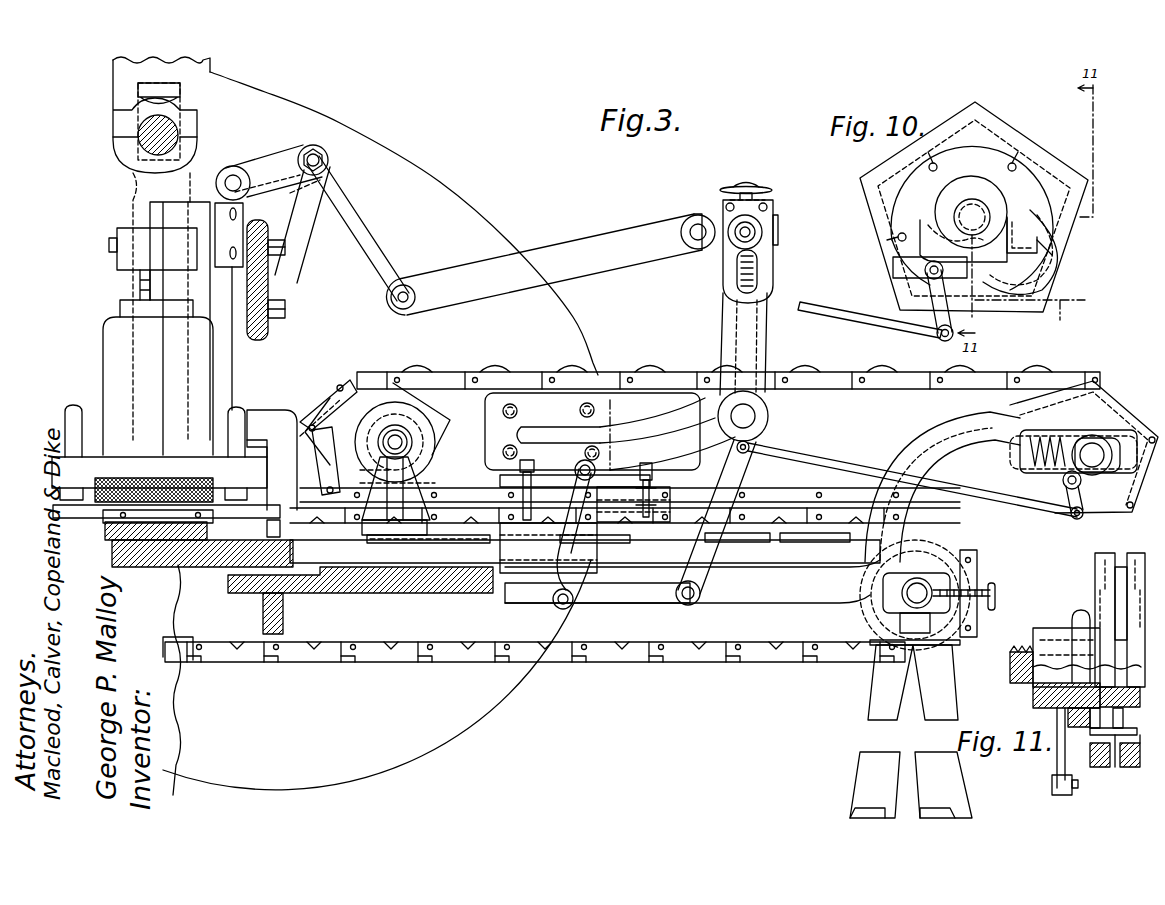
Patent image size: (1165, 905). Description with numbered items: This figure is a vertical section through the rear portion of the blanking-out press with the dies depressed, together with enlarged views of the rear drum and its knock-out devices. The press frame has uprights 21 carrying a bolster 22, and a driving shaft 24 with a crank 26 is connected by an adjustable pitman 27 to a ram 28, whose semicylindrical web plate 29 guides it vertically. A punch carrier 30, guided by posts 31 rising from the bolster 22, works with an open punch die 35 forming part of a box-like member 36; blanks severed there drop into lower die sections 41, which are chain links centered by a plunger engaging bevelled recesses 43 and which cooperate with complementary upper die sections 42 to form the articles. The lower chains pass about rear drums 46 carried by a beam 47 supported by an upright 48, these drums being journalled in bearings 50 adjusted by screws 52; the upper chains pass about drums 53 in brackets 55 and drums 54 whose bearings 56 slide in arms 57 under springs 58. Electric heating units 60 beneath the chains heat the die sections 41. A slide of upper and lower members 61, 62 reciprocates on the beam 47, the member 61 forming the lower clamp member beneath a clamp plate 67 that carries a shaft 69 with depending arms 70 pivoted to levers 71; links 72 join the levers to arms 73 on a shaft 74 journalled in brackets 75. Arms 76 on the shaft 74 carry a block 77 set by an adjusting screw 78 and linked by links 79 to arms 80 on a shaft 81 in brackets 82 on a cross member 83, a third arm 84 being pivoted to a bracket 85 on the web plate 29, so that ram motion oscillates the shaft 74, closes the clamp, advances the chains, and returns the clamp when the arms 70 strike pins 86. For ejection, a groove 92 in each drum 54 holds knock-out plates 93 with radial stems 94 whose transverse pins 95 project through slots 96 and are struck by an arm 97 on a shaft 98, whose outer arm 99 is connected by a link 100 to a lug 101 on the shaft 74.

In FIG. 3, the uprights 21 is at (440, 182).
In FIG. 3, the bolster 22 is at (160, 567).
In FIG. 3, the driving shaft 24 is at (175, 98).
In FIG. 3, the crank 26 is at (138, 147).
In FIG. 3, the pitman 27 is at (128, 210).
In FIG. 3, the ram 28 is at (110, 353).
In FIG. 3, the web plate 29 is at (228, 378).
In FIG. 3, the punch carrier 30 is at (52, 470).
In FIG. 3, the posts 31 is at (65, 417).
In FIG. 3, the punch die 35 is at (100, 503).
In FIG. 3, the box-like member 36 is at (112, 523).
In FIG. 3, the lower die sections 41 is at (398, 664).
In FIG. 3, the upper die sections 42 is at (822, 377).
In FIG. 3, the bevelled recesses 43 is at (308, 641).
In FIG. 3, the drums 46 is at (860, 600).
In FIG. 3, the beam 47 is at (772, 570).
In FIG. 3, the upright 48 is at (850, 762).
In FIG. 3, the bearings 50 is at (940, 575).
In FIG. 3, the adjusting screws 52 is at (997, 592).
In FIG. 3, the drums 53 is at (425, 418).
In FIG. 3, the drums 54 is at (1068, 400).
In FIG. 10, the drums 54 is at (1085, 200).
In FIG. 11, the drums 54 is at (1142, 555).
In FIG. 3, the brackets 55 is at (422, 478).
In FIG. 3, the bearings 56 is at (1110, 440).
In FIG. 10, the bearings 56 is at (1005, 222).
In FIG. 11, the bearings 56 is at (1034, 698).
In FIG. 3, the arms 57 is at (903, 440).
In FIG. 10, the arms 57 is at (1050, 258).
In FIG. 11, the arms 57 is at (1012, 680).
In FIG. 3, the springs 58 is at (1035, 430).
In FIG. 3, the electric heating units 60 is at (452, 545).
In FIG. 3, the upper slide member 61 is at (665, 500).
In FIG. 3, the lower slide member 62 is at (530, 573).
In FIG. 3, the clamp plate 67 is at (660, 478).
In FIG. 3, the shaft 69 is at (576, 465).
In FIG. 3, the depending arms 70 is at (553, 603).
In FIG. 3, the levers 71 is at (575, 612).
In FIG. 3, the links 72 is at (662, 605).
In FIG. 3, the arms 73 is at (702, 596).
In FIG. 3, the shaft 74 is at (768, 416).
In FIG. 3, the brackets 75 is at (655, 403).
In FIG. 3, the arms 76 is at (725, 336).
In FIG. 3, the block 77 is at (775, 232).
In FIG. 3, the adjusting screw 78 is at (756, 186).
In FIG. 3, the links 79 is at (598, 242).
In FIG. 3, the arms 80 is at (368, 234).
In FIG. 3, the shaft 81 is at (327, 160).
In FIG. 3, the brackets 82 is at (292, 250).
In FIG. 3, the cross member 83 is at (258, 340).
In FIG. 3, the third arm 84 is at (272, 170).
In FIG. 3, the bracket 85 is at (218, 180).
In FIG. 3, the pins 86 is at (500, 545).
In FIG. 11, the groove 92 is at (1121, 761).
In FIG. 10, the knock-out plates 93 is at (1005, 148).
In FIG. 11, the knock-out plates 93 is at (1140, 760).
In FIG. 10, the stems 94 is at (1010, 258).
In FIG. 11, the stems 94 is at (1110, 715).
In FIG. 10, the transverse pins 95 is at (940, 167).
In FIG. 11, the transverse pins 95 is at (1125, 730).
In FIG. 10, the slots 96 is at (1020, 167).
In FIG. 11, the slots 96 is at (1132, 748).
In FIG. 10, the arm 97 is at (985, 265).
In FIG. 11, the arm 97 is at (1092, 740).
In FIG. 3, the shaft 98 is at (1060, 477).
In FIG. 10, the shaft 98 is at (900, 270).
In FIG. 3, the arm 99 is at (1080, 518).
In FIG. 10, the arm 99 is at (930, 305).
In FIG. 11, the arm 99 is at (1056, 760).
In FIG. 3, the link 100 is at (858, 468).
In FIG. 10, the link 100 is at (845, 310).
In FIG. 11, the link 100 is at (1065, 795).
In FIG. 3, the lug 101 is at (750, 446).